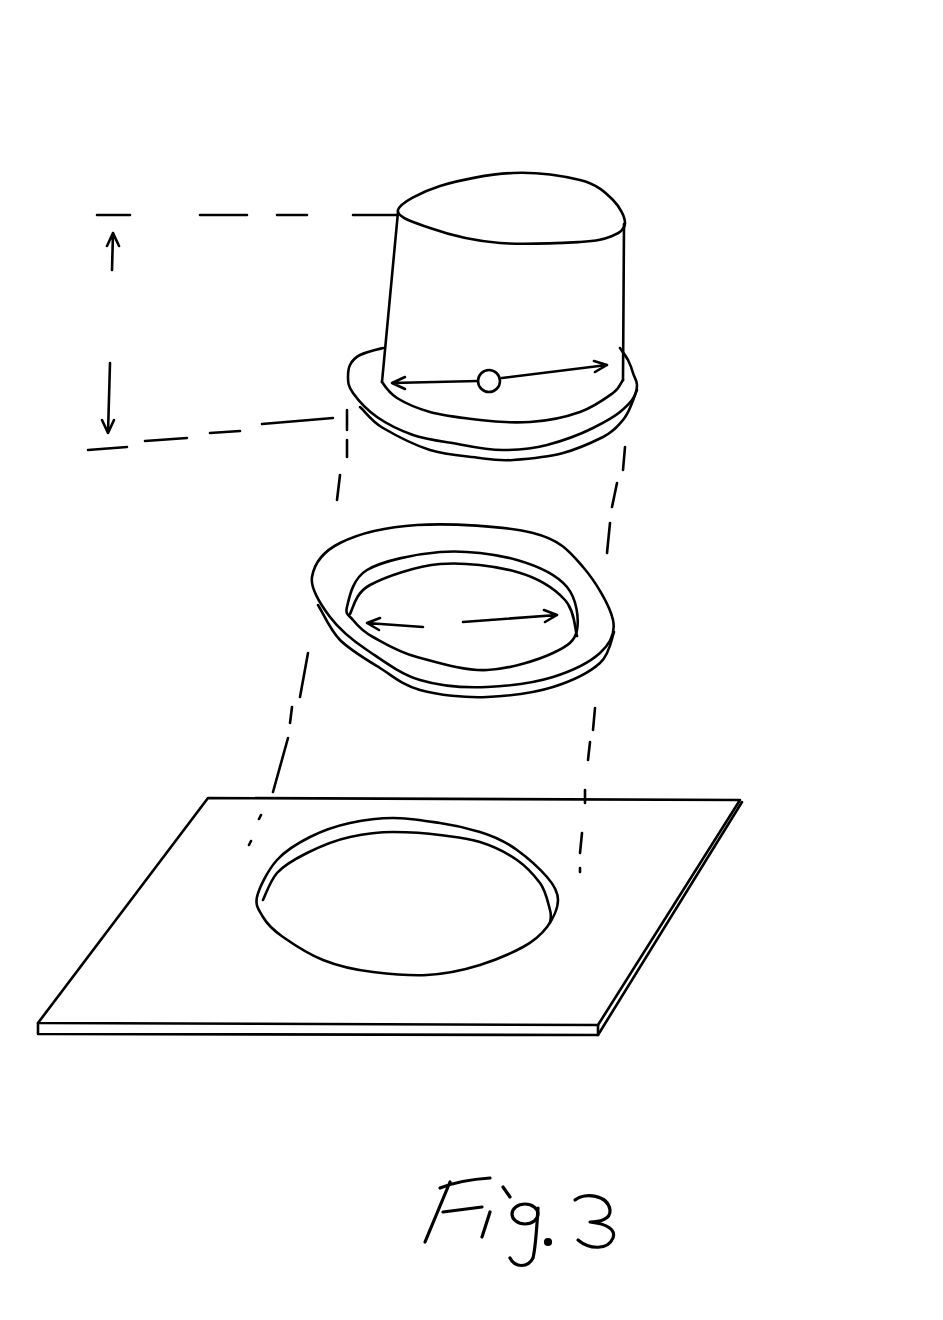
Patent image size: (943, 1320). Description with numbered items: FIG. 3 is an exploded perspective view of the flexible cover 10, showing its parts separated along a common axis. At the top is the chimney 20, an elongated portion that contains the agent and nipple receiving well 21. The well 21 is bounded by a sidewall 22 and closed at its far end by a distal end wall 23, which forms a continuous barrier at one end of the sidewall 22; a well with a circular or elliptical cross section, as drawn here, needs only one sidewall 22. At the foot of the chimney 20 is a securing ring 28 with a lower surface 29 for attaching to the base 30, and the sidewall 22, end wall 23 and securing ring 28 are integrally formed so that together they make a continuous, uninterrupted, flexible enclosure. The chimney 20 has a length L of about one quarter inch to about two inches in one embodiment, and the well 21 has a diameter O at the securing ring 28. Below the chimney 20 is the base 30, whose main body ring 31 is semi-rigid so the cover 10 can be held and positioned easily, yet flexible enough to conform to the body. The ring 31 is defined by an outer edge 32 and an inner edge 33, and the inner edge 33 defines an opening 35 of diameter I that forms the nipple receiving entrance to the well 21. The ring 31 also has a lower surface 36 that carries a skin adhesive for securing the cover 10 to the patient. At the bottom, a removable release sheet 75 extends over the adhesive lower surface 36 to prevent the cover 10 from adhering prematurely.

The flexible cover 10 is at (707, 133).
The chimney 20 is at (373, 293).
The receiving well 21 is at (552, 300).
The sidewall 22 is at (605, 287).
The distal end wall 23 is at (533, 200).
The securing ring 28 is at (630, 383).
The lower surface of securing ring 29 is at (390, 433).
The base 30 is at (590, 630).
The main body ring 31 is at (553, 573).
The outer edge 32 is at (587, 583).
The inner edge 33 is at (372, 572).
The opening 35 is at (470, 633).
The lower surface of ring 36 is at (363, 662).
The release sheet 75 is at (673, 833).